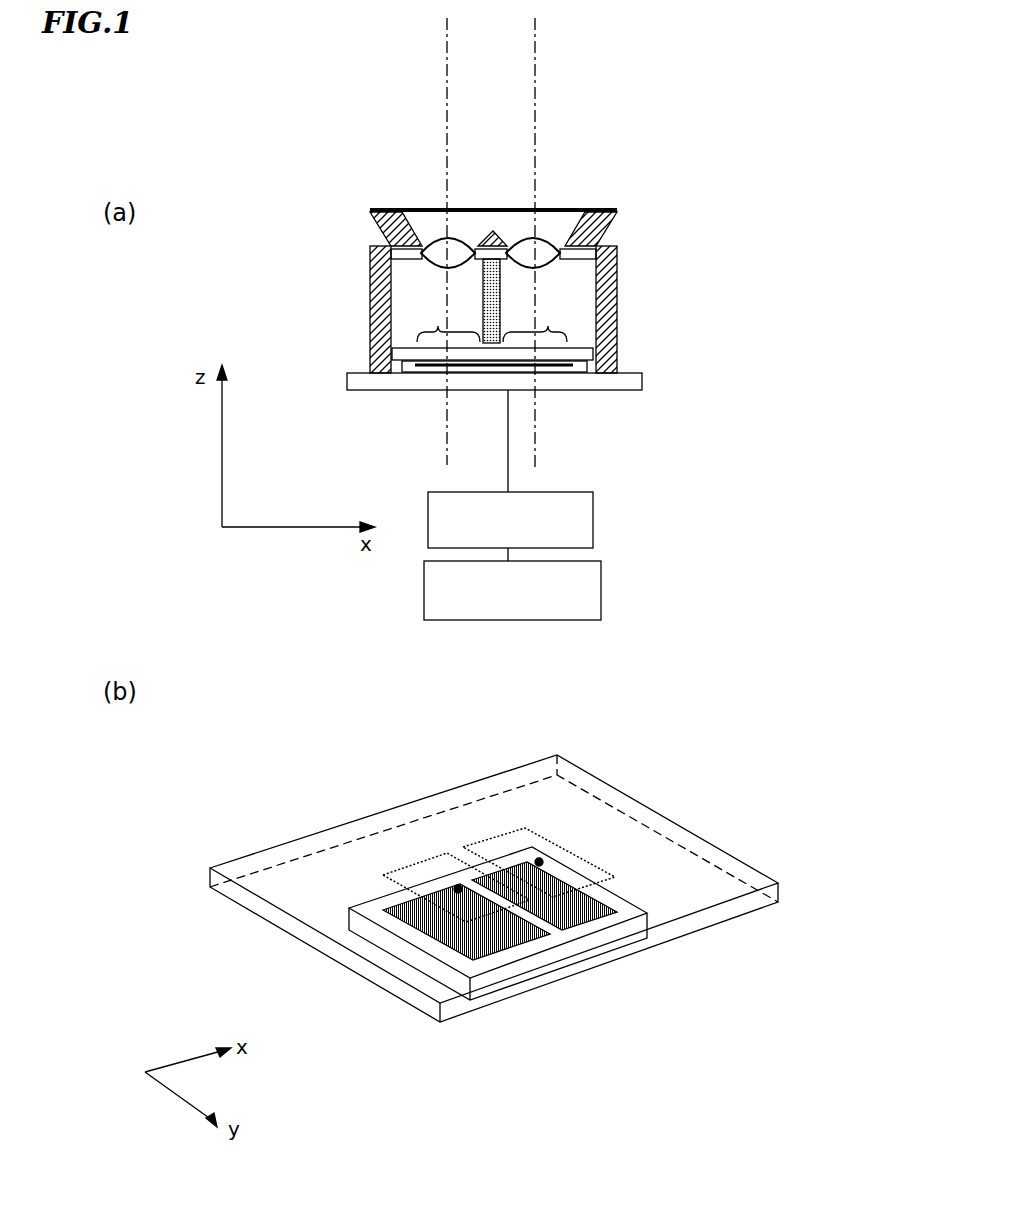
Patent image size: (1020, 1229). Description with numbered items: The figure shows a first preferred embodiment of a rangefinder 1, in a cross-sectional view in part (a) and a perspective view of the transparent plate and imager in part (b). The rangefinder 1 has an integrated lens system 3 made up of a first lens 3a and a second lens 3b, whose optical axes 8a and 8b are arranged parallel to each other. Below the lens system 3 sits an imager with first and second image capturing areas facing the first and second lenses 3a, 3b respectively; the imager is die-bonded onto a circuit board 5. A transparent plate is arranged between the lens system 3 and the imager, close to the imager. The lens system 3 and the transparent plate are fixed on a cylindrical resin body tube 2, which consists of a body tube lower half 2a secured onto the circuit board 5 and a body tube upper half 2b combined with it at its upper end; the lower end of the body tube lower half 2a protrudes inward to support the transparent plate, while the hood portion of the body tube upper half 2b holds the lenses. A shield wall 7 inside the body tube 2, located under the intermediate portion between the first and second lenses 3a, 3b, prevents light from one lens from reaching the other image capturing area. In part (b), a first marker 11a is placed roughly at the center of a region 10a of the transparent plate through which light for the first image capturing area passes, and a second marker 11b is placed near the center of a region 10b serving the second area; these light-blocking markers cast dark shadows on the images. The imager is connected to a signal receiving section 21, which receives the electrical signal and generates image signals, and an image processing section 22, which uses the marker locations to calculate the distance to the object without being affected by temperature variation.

The rangefinder 1 is at (609, 270).
The body tube 2 is at (571, 291).
The body tube lower half 2a is at (550, 309).
The body tube upper half 2b is at (617, 222).
The lens system 3 is at (493, 176).
The first lens 3a is at (554, 212).
The second lens 3b is at (455, 253).
The circuit board 5 is at (597, 377).
The shield wall 7 is at (482, 343).
The optical axis 8a is at (538, 458).
The optical axis 8b is at (452, 456).
The region 10a is at (587, 867).
The region 10b is at (428, 872).
The first marker 11a is at (539, 862).
The second marker 11b is at (458, 888).
The signal receiving section 21 is at (607, 512).
The image processing section 22 is at (602, 587).